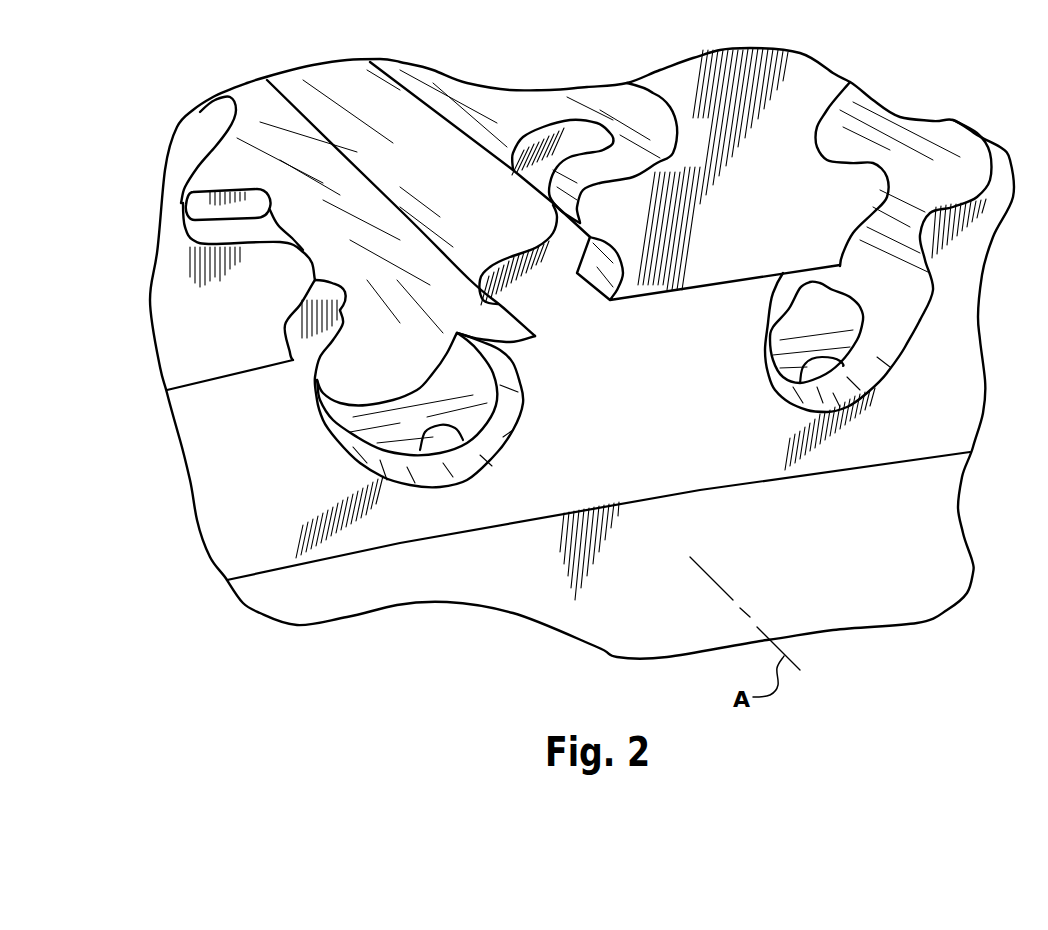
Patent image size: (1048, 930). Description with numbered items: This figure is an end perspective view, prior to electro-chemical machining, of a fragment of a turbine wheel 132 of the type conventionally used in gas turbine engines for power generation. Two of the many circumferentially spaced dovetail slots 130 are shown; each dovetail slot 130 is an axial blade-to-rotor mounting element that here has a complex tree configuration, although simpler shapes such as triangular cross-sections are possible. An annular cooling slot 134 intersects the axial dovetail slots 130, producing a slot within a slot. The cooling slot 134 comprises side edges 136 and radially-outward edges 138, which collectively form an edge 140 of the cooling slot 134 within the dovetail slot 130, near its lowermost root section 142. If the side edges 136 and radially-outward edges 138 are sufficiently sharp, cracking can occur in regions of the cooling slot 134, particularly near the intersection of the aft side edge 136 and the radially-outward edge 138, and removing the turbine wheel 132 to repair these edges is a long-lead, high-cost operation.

The dovetail slot 130 is at (250, 112).
The turbine wheel 132 is at (784, 554).
The annular cooling slot 134 is at (448, 380).
The side edge 136 is at (450, 350).
The radially-outward edge 138 is at (512, 342).
The edge 140 is at (458, 322).
The root section 142 is at (398, 377).